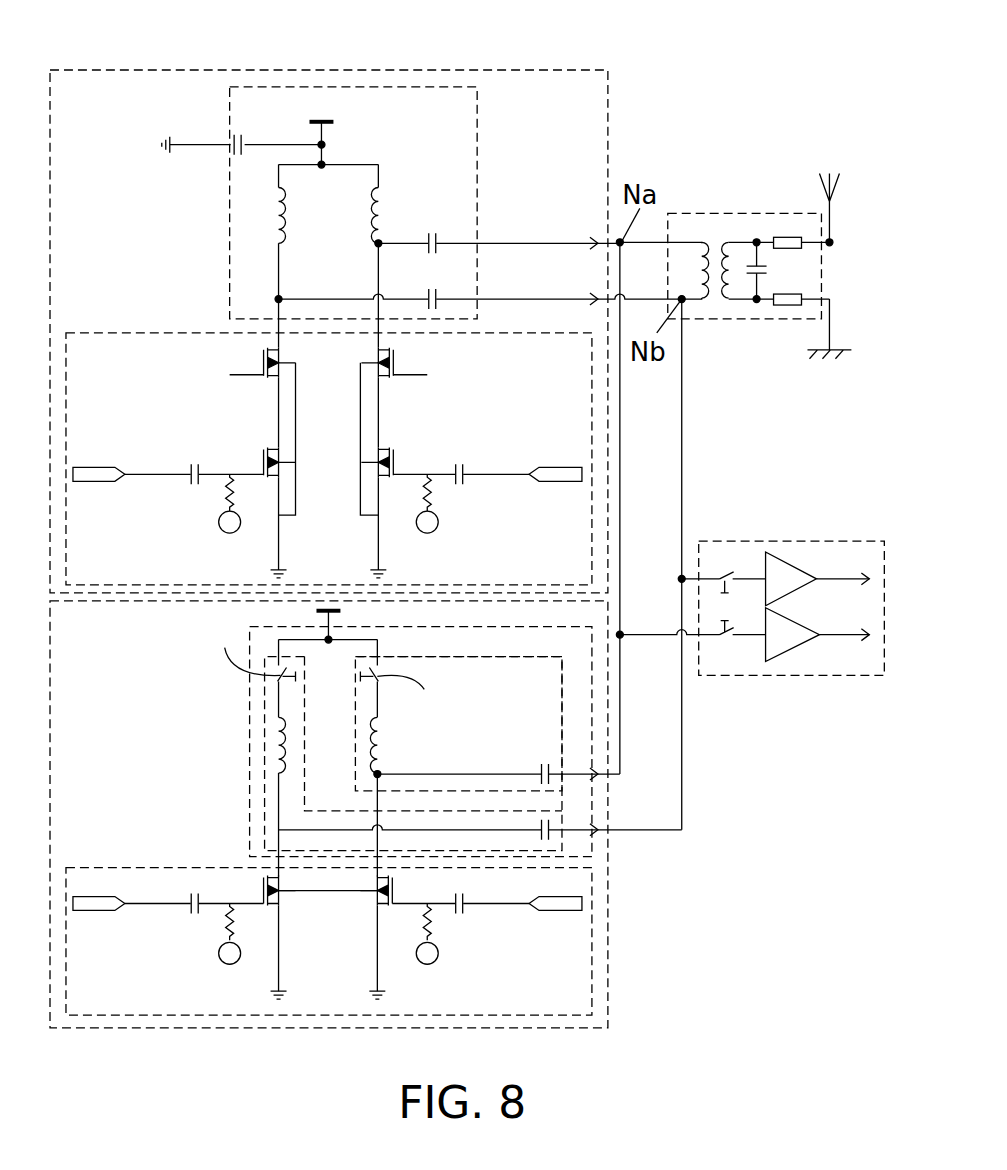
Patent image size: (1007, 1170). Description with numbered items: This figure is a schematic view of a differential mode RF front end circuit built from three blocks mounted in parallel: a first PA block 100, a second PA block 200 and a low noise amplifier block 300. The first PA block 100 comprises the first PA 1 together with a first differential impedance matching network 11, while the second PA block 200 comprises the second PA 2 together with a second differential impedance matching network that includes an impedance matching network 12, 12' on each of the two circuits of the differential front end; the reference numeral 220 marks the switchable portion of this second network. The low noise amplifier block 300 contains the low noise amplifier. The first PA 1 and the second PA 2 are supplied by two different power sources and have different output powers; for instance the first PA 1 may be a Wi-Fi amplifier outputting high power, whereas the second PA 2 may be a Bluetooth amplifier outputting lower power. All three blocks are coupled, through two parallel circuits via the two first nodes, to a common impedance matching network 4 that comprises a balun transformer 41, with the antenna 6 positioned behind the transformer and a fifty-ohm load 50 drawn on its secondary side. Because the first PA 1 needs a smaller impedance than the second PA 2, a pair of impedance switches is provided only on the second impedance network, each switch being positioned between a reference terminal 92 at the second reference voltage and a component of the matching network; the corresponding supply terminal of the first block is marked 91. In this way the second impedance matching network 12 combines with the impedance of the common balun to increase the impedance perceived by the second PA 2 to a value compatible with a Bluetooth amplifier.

The first PA block 100 is at (556, 66).
The first differential impedance matching network 11 is at (478, 166).
The first supply voltage terminal Vdd1 91 is at (330, 121).
The first PA 1 is at (145, 329).
The reference terminal 92 is at (323, 604).
The second PA block 200 is at (607, 980).
The switchable output network 220 is at (247, 712).
The impedance matching network 12' is at (436, 767).
The second impedance matching network 12 is at (487, 767).
The second PA 2 is at (106, 868).
The common impedance matching network 4 is at (730, 211).
The balun transformer 41 is at (712, 310).
The 50 ohm load resistors 50 is at (796, 271).
The antenna 6 is at (830, 200).
The LNA block 300 is at (820, 540).